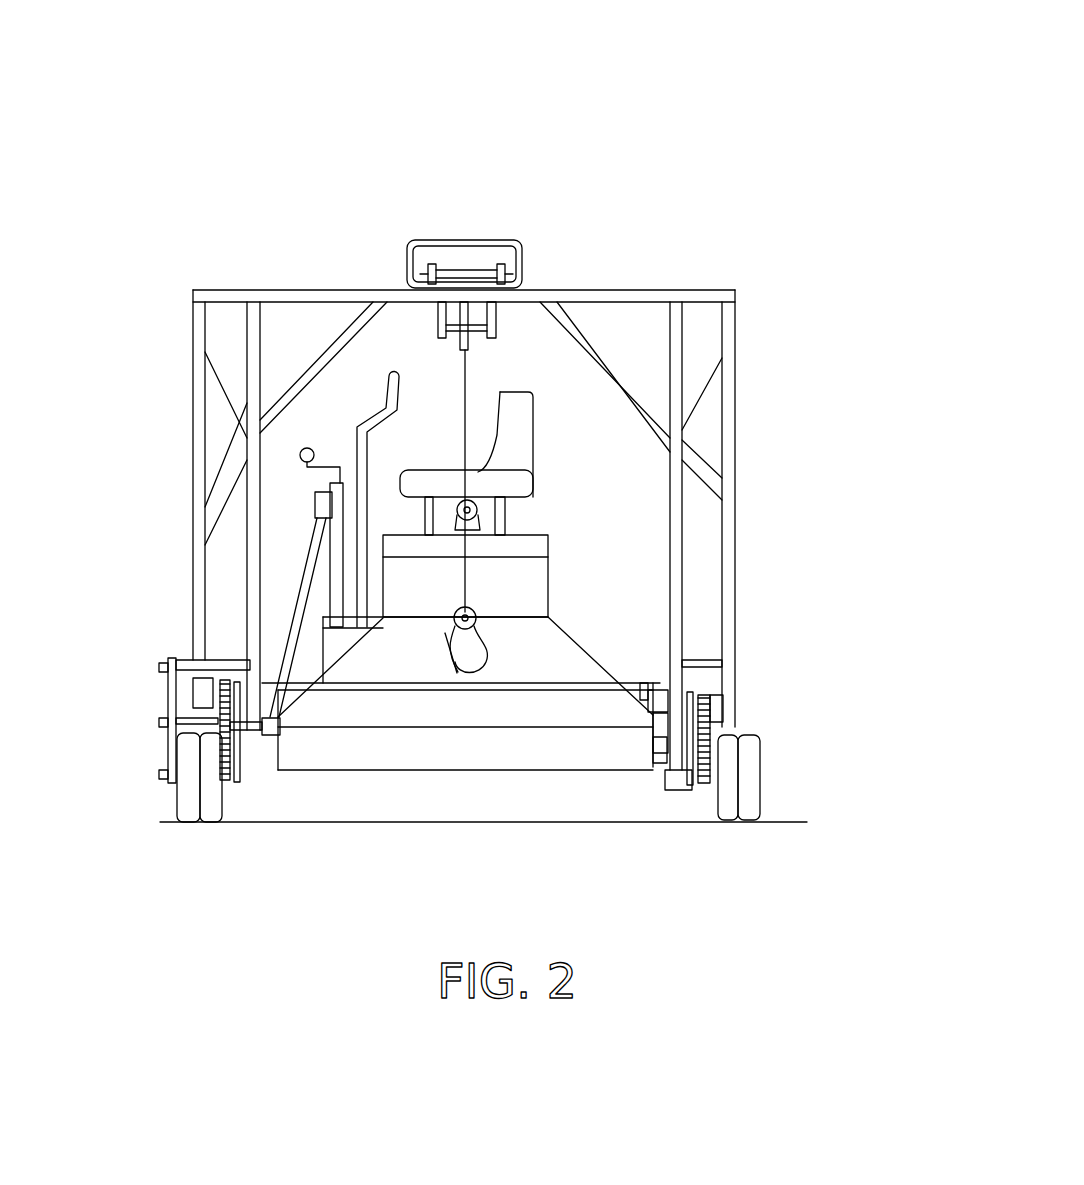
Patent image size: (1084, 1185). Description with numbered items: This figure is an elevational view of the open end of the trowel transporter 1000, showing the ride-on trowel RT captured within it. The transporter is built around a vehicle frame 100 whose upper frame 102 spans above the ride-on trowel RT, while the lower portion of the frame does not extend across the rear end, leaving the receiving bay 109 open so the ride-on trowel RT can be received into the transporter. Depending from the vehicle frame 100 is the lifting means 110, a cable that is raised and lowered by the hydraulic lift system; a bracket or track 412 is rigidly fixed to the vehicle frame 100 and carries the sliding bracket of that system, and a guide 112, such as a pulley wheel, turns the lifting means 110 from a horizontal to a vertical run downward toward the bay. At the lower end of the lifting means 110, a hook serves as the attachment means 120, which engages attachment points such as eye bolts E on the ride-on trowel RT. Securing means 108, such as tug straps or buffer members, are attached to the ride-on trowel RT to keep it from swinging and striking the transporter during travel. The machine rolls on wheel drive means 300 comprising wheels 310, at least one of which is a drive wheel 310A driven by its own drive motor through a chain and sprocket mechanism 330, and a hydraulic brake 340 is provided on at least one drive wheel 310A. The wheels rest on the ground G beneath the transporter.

The trowel transporter 1000 is at (567, 170).
The vehicle frame 100 is at (728, 510).
The upper frame 102 is at (652, 292).
The securing means 108 is at (270, 727).
The receiving bay 109 is at (427, 432).
The lifting means 110 is at (467, 400).
The guide 112 is at (477, 338).
The attachment means 120 is at (472, 520).
The track 412 is at (498, 264).
The wheel drive means 300 is at (885, 683).
The wheels 310 is at (190, 805).
The drive wheel 310A is at (748, 782).
The chain and sprocket mechanism 330 is at (715, 738).
The hydraulic brake 340 is at (698, 702).
The eye bolts E is at (470, 655).
The ride-on trowel RT is at (461, 726).
The ground G is at (778, 825).